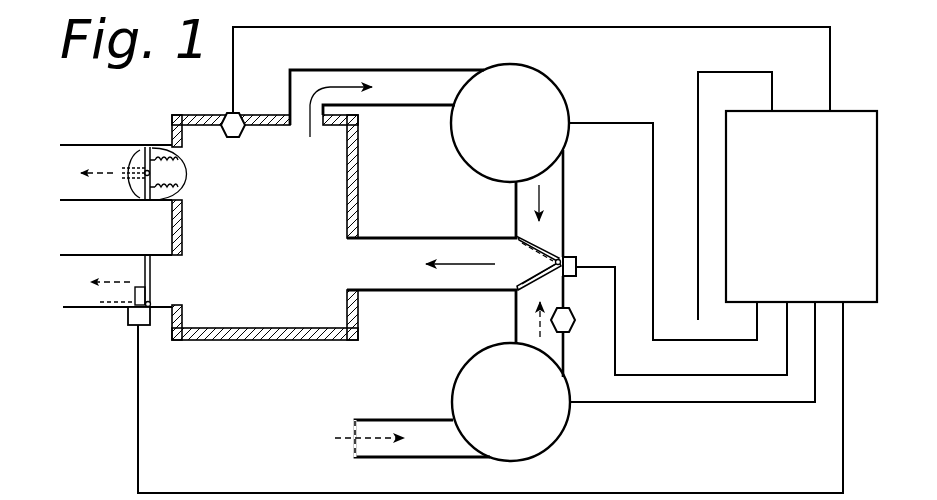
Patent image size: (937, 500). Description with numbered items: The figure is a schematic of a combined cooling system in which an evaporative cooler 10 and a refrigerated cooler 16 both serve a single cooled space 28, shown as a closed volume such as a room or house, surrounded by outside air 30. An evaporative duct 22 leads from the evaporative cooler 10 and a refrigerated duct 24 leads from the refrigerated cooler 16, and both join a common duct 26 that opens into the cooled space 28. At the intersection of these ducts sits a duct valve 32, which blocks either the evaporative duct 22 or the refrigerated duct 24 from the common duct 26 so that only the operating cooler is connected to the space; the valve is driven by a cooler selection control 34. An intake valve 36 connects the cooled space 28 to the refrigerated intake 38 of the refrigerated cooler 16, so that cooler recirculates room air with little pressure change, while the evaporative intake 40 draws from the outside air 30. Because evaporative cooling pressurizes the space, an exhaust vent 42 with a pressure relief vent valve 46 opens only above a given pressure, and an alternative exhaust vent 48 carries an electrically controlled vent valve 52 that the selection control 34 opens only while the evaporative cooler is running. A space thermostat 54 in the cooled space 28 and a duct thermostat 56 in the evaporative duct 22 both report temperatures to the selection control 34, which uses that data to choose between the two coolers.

The evaporative cooler 10 is at (555, 437).
The refrigerated cooler 16 is at (558, 100).
The evaporative duct 22 is at (563, 350).
The refrigerated duct 24 is at (563, 180).
The common duct 26 is at (462, 290).
The cooled space 28 is at (292, 290).
The outside air 30 is at (344, 385).
The duct valve 32 is at (538, 279).
The cooler selection control 34 is at (798, 246).
The intake valve 36 is at (311, 118).
The refrigerated intake 38 is at (421, 70).
The evaporative intake 40 is at (435, 423).
The exhaust vent 42 is at (185, 174).
The pressure relief vent valve 46 is at (137, 157).
The exhaust vent 48 is at (172, 293).
The electrically controlled vent valve 52 is at (140, 260).
The space thermostat 54 is at (235, 113).
The duct thermostat 56 is at (570, 312).